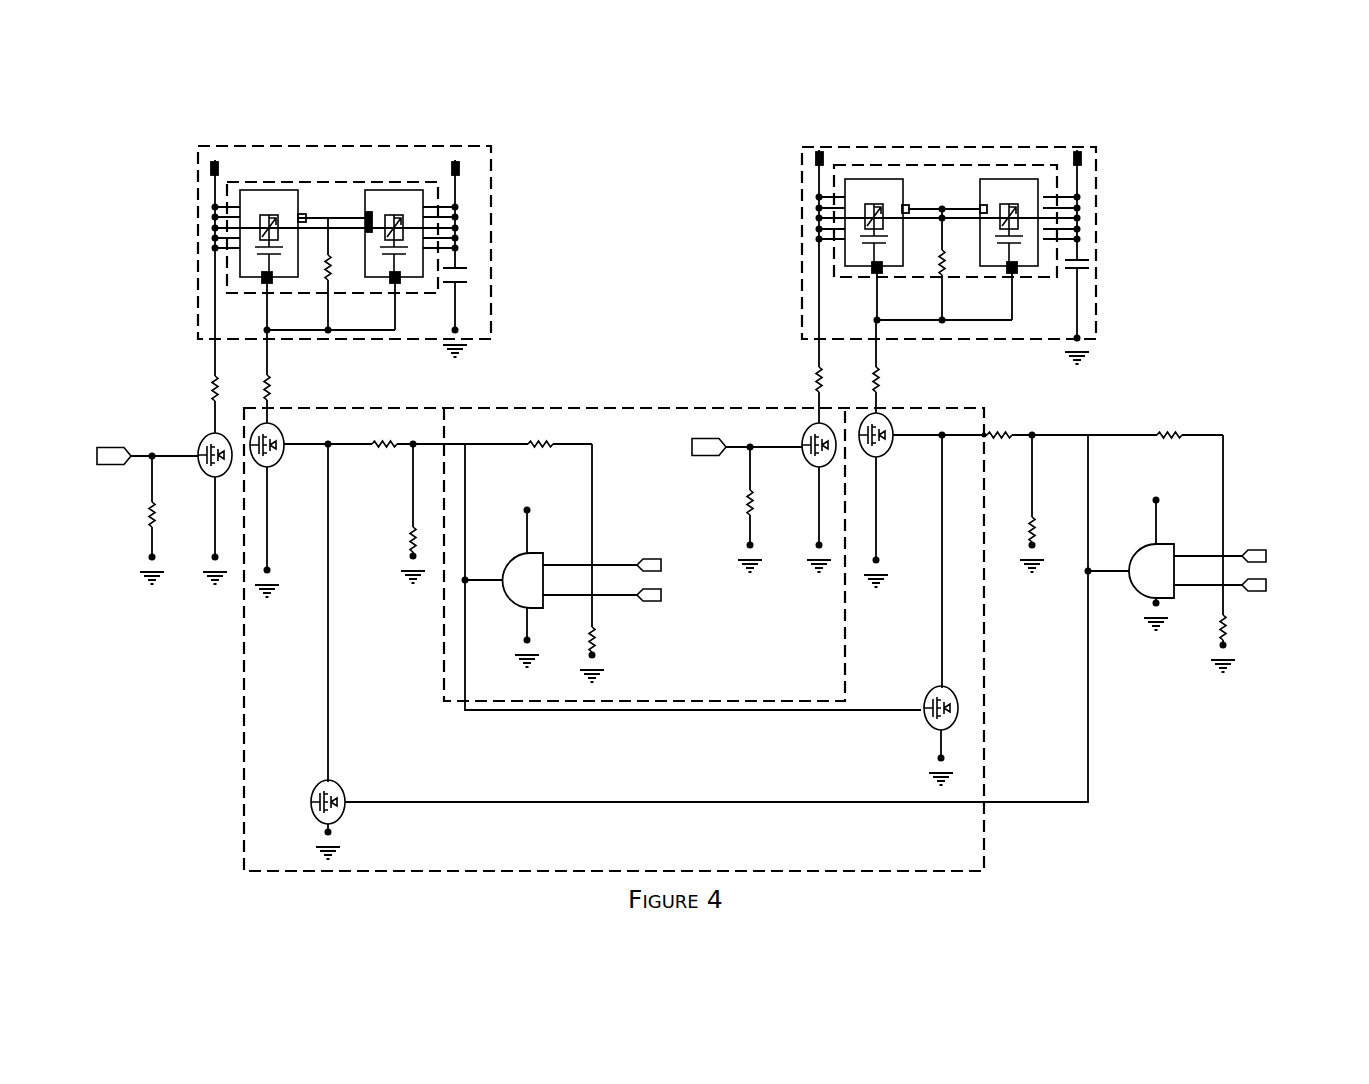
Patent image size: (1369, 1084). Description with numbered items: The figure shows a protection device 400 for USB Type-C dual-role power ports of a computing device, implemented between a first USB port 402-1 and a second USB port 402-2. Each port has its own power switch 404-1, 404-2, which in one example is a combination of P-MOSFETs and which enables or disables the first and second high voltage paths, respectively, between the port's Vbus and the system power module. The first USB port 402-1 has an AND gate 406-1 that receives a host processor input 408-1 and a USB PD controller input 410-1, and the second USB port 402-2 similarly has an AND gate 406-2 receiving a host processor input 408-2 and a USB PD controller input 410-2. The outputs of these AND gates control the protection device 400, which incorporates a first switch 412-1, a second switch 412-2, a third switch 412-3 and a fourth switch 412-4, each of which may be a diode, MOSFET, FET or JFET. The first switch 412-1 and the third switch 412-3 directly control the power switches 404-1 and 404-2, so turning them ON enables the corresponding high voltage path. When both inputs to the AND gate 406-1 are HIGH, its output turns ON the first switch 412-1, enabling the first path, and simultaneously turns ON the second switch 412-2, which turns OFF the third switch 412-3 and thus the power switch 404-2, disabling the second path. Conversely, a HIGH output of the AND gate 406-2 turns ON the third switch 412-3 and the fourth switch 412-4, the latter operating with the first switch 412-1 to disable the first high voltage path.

The protection device 400 is at (984, 840).
The first USB port 402-1 is at (491, 223).
The second USB port 402-2 is at (802, 303).
The power switch 404-1 is at (438, 293).
The power switch 404-2 is at (833, 276).
The AND gate 406-1 is at (543, 563).
The AND gate 406-2 is at (1174, 547).
The host processor input 408-1 is at (648, 560).
The host processor input 408-2 is at (1248, 551).
The USB PD controller input 410-1 is at (648, 601).
The USB PD controller input 410-2 is at (1248, 590).
The first switch 412-1 is at (279, 431).
The second switch 412-2 is at (956, 720).
The third switch 412-3 is at (888, 421).
The fourth switch 412-4 is at (341, 813).